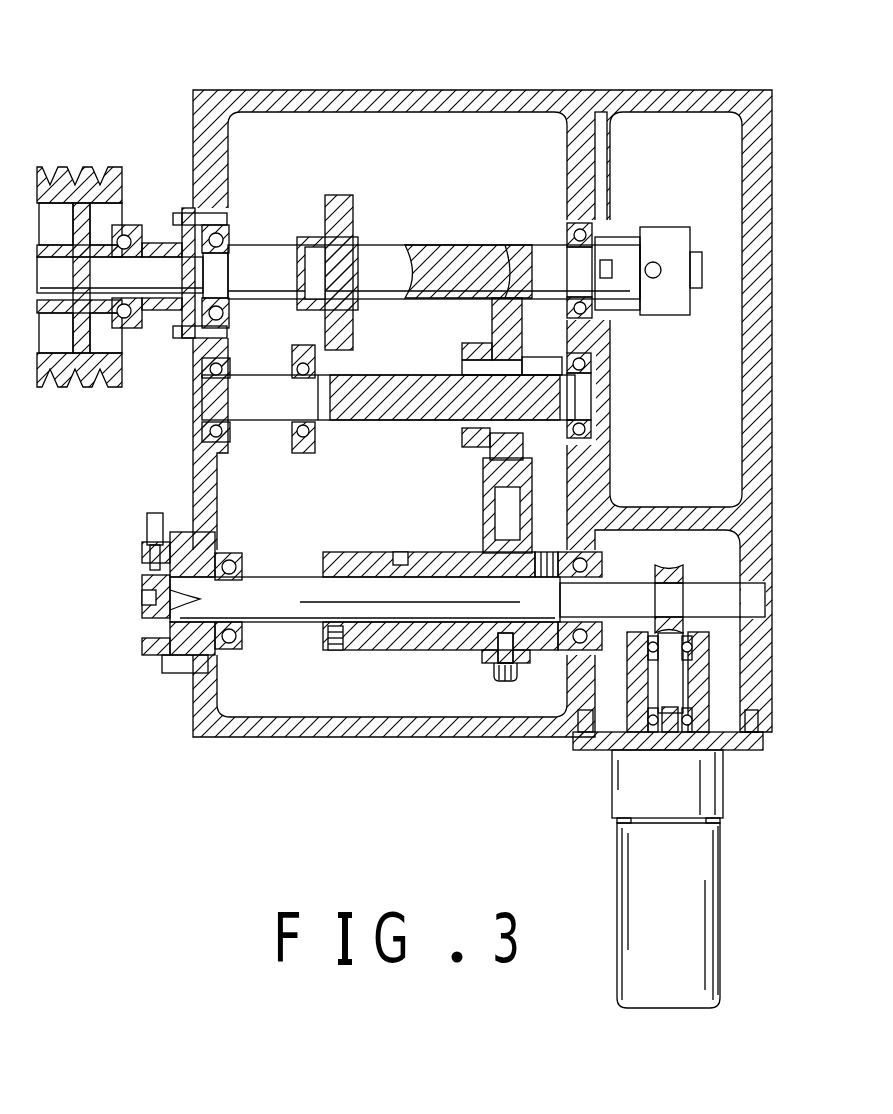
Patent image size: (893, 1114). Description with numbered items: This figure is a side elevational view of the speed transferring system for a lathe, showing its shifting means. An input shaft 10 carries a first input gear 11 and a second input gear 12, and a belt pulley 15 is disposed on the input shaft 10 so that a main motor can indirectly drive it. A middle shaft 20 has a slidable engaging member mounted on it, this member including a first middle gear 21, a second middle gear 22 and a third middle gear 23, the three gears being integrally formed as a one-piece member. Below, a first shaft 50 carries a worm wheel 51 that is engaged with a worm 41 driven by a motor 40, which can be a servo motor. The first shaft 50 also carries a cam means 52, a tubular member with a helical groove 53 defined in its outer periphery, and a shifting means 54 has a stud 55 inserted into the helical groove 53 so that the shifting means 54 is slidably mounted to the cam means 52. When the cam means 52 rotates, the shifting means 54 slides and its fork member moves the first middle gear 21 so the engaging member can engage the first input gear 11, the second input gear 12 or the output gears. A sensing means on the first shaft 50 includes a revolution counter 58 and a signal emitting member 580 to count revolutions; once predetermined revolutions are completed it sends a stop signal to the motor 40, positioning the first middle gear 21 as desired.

The input shaft 10 is at (258, 256).
The first input gear 11 is at (342, 196).
The second input gear 12 is at (430, 245).
The belt pulley 15 is at (80, 196).
The middle shaft 20 is at (385, 375).
The first middle gear 21 is at (507, 313).
The second middle gear 22 is at (468, 446).
The third middle gear 23 is at (541, 432).
The motor 40 is at (705, 848).
The worm 41 is at (688, 620).
The first shaft 50 is at (272, 620).
The worm wheel 51 is at (685, 583).
The cam means 52 is at (395, 650).
The helical groove 53 is at (400, 553).
The shifting means 54 is at (486, 520).
The stud 55 is at (510, 683).
The revolution counter 58 is at (148, 535).
The signal emitting member 580 is at (142, 580).